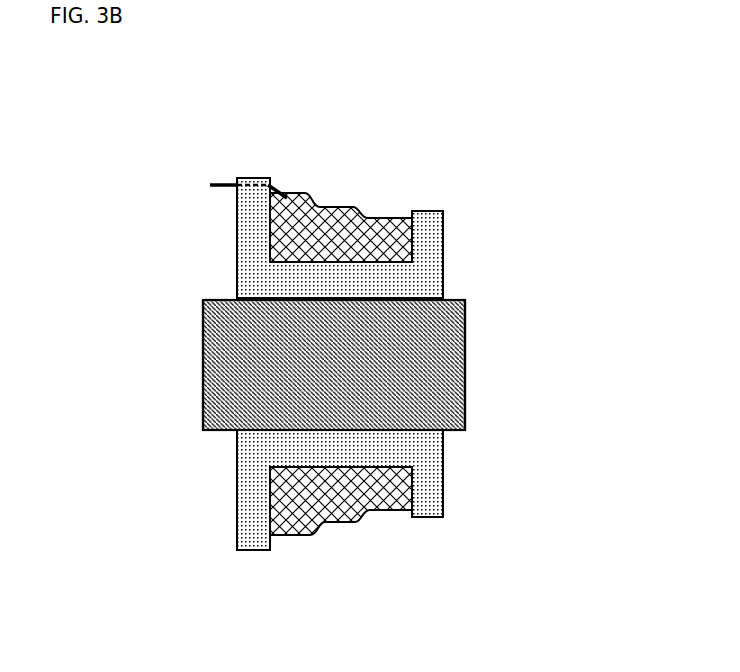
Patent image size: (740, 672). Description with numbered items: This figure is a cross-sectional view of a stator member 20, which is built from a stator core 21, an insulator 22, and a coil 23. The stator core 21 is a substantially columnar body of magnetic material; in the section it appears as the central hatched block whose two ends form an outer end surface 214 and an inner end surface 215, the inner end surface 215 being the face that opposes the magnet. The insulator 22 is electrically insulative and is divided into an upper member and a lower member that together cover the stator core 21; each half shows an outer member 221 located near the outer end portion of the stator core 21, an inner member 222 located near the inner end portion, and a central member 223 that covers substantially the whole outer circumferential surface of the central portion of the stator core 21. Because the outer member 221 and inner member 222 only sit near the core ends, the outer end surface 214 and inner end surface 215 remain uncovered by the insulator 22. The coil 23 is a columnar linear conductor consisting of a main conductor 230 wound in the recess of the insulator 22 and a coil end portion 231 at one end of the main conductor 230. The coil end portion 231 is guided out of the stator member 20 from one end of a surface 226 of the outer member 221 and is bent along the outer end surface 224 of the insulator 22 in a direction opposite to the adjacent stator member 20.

The stator member 20 is at (481, 90).
The stator core 21 is at (227, 320).
The outer end surface 214 is at (203, 395).
The inner end surface 215 is at (467, 365).
The insulator 22 is at (301, 538).
The outer member 221 is at (255, 537).
The inner member 222 is at (421, 504).
The central member 223 is at (347, 460).
The outer end surface of the insulator 224 is at (237, 520).
The one surface of the outer member 226 is at (248, 176).
The coil 23 is at (340, 175).
The main conductor 230 is at (320, 220).
The coil end portion 231 is at (290, 165).